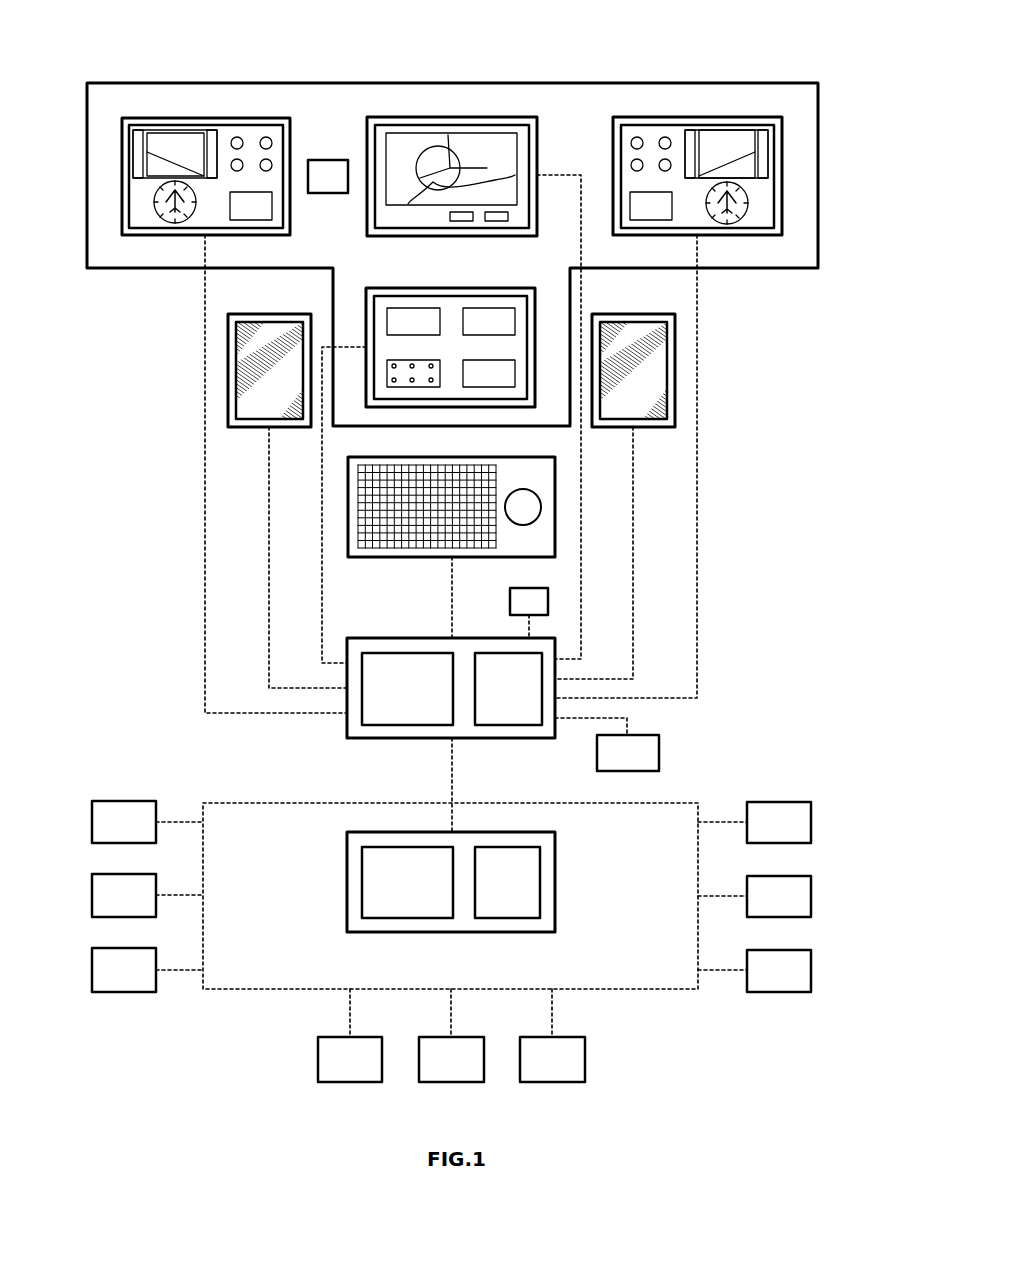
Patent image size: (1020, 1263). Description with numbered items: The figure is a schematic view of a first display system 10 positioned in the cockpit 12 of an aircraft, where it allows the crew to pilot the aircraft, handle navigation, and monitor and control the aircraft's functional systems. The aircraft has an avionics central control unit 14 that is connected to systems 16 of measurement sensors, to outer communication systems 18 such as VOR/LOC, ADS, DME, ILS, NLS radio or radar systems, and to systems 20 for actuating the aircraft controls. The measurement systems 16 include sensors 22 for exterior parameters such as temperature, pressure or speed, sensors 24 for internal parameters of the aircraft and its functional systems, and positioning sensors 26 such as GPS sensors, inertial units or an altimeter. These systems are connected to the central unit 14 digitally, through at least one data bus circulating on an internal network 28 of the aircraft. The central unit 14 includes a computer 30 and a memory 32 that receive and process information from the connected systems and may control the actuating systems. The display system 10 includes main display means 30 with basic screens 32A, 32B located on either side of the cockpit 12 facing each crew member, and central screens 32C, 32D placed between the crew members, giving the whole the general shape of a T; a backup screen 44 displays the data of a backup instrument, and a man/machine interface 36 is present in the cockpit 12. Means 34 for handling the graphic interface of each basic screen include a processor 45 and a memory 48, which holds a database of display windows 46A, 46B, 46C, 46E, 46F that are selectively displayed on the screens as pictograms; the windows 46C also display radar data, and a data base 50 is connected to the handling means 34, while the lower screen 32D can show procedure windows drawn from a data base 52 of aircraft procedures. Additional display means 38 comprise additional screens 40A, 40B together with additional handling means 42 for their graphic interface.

The display system 10 is at (848, 178).
The cockpit 12 is at (172, 436).
The avionics central control unit 14 is at (395, 905).
The systems of measurement sensors 16 is at (98, 955).
The outer communication systems 18 is at (280, 1069).
The control systems 20 is at (785, 756).
The exterior parameter sensors 22 is at (92, 970).
The internal parameter sensors 24 is at (92, 895).
The positioning sensors 26 is at (92, 820).
The internal network 28 is at (228, 803).
The main display means 30 is at (147, 290).
The memory 32 is at (505, 920).
The basic screen 32A is at (443, 130).
The basic screen 32B is at (697, 108).
The central screen 32C is at (459, 206).
The lower central screen 32D is at (487, 348).
The handling means 34 is at (451, 673).
The additional handling means 42 is at (523, 573).
The man/machine interface 36 is at (578, 510).
The additional display means 38 is at (501, 420).
The additional screen 40A is at (236, 445).
The additional screen 40B is at (666, 445).
The backup screen 44 is at (330, 166).
The processor 45 is at (393, 638).
The display window 46A is at (151, 133).
The display window 46B is at (250, 138).
The display window 46C is at (508, 143).
The display window 46E is at (500, 370).
The display window 46F is at (400, 387).
The memory 48 is at (514, 726).
The data base 50 is at (656, 752).
The data base of aircraft procedures 52 is at (548, 600).